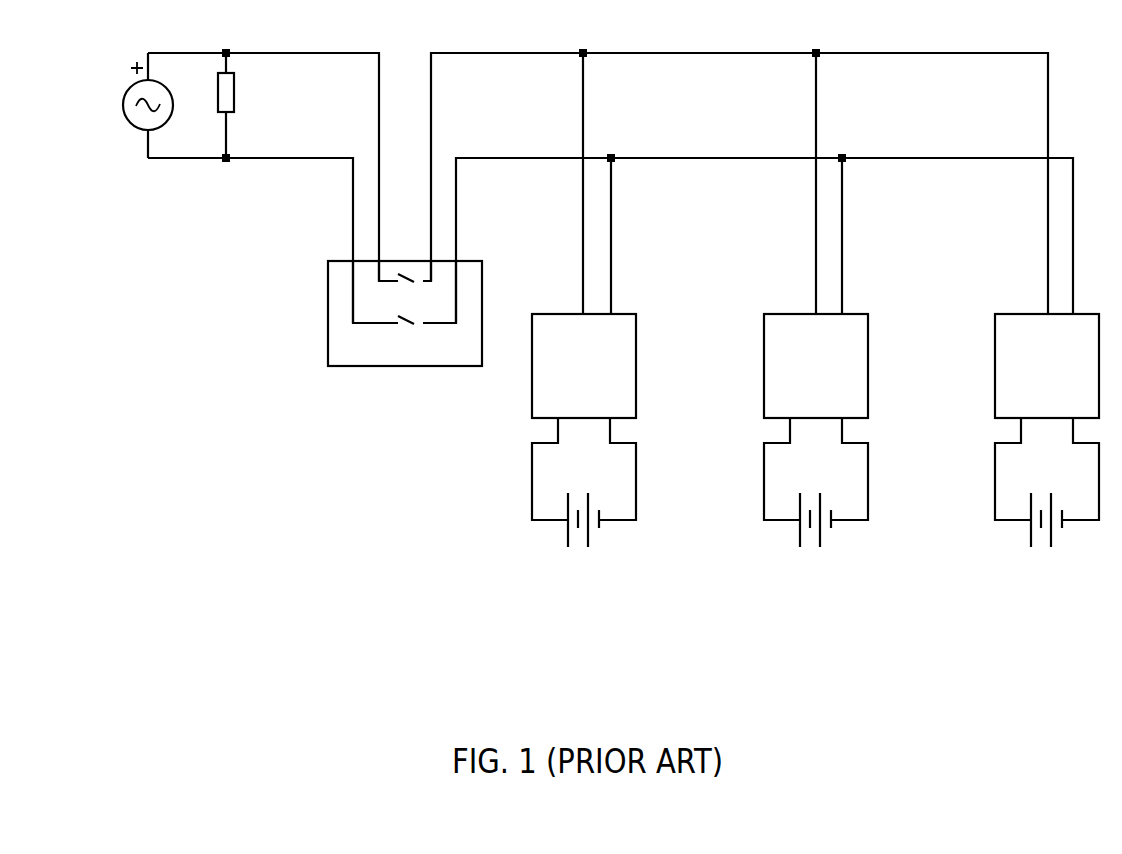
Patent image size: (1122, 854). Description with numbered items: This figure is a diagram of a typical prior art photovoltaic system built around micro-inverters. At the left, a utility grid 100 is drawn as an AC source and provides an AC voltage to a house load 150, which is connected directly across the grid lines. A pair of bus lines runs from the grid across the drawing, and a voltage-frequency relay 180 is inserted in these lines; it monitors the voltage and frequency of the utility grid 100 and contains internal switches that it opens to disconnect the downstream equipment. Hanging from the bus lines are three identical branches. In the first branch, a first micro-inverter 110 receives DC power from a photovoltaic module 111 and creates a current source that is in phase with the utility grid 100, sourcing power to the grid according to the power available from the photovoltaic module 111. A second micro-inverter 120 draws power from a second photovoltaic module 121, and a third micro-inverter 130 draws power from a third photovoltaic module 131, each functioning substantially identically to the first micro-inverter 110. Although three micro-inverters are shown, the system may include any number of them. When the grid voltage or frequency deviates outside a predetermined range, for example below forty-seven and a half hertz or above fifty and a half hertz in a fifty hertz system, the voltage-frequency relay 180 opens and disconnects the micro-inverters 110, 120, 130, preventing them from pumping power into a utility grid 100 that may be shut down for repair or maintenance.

The utility grid 100 is at (102, 142).
The house load 150 is at (246, 140).
The voltage-frequency relay 180 is at (300, 347).
The first micro-inverter 110 is at (545, 390).
The photovoltaic module 111 is at (535, 545).
The second micro-inverter 120 is at (777, 390).
The second photovoltaic module 121 is at (767, 545).
The third micro-inverter 130 is at (1008, 390).
The third photovoltaic module 131 is at (998, 545).